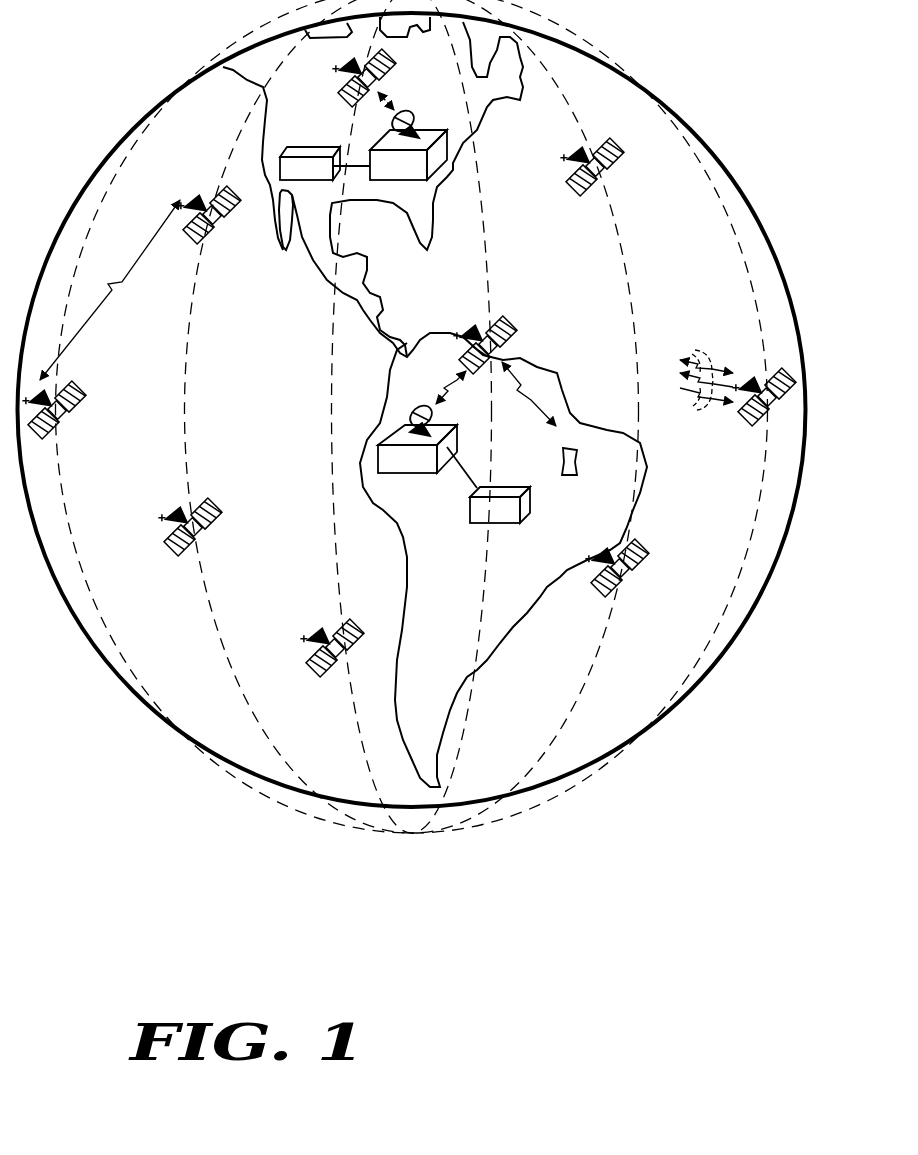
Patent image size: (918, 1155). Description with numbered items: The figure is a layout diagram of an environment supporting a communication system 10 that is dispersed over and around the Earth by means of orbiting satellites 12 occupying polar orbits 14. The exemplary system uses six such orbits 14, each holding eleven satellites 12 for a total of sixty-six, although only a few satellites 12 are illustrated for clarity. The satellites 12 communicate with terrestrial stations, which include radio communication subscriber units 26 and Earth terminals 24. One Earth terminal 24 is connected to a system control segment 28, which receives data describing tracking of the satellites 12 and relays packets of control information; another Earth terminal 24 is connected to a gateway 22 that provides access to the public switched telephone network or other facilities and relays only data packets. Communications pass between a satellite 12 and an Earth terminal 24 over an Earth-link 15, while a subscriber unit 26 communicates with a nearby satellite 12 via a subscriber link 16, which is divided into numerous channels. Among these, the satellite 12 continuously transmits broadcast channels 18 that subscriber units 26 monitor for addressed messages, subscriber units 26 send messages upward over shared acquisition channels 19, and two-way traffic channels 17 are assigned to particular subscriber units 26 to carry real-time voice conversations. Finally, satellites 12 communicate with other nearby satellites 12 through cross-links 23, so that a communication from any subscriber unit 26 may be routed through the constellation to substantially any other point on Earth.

The communication system 10 is at (407, 925).
The satellite 12 is at (352, 100).
The orbit 14 is at (733, 215).
The Earth-link 15 is at (447, 385).
The subscriber link 16 is at (527, 375).
The traffic channel 17 is at (697, 348).
The broadcast channel 18 is at (679, 368).
The acquisition channel 19 is at (697, 396).
The gateway 22 is at (506, 524).
The cross-link 23 is at (123, 278).
The Earth terminal 24 is at (432, 130).
The subscriber unit 26 is at (567, 477).
The system control segment 28 is at (293, 182).